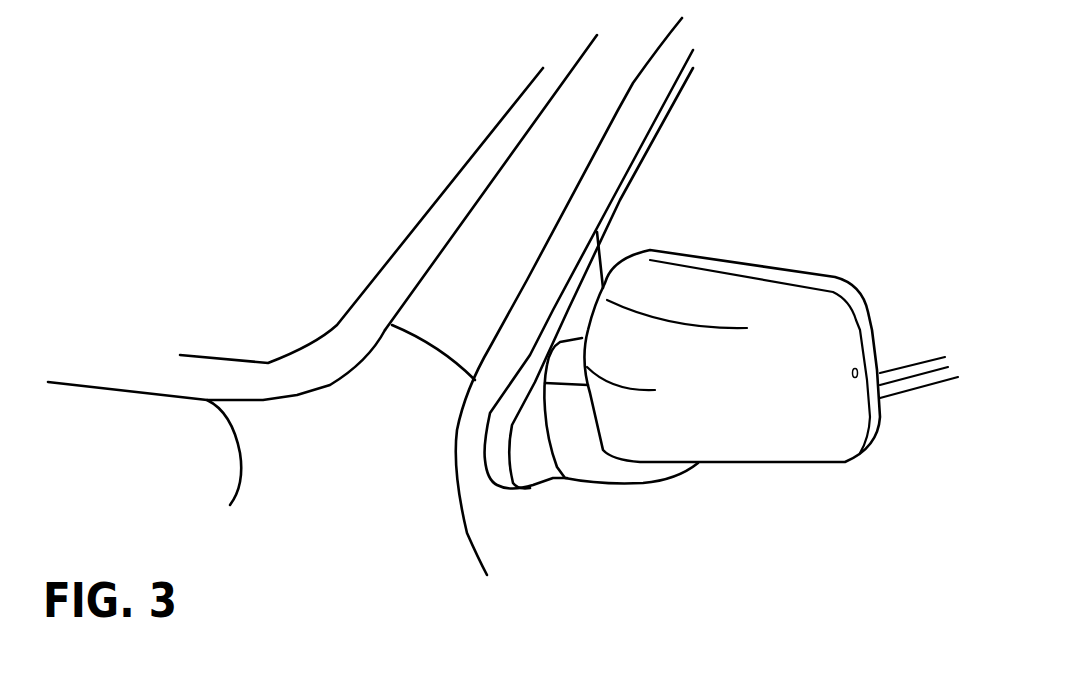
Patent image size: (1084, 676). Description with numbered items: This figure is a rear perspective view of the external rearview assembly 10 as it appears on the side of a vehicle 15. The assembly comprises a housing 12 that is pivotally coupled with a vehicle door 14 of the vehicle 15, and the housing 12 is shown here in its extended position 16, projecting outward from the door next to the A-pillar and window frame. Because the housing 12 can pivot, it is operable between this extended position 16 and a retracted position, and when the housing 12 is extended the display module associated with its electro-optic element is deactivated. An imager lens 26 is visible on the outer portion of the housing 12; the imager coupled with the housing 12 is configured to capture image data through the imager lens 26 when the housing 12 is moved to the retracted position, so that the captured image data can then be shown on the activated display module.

The external rearview assembly 10 is at (738, 381).
The housing 12 is at (742, 440).
The vehicle door 14 is at (896, 517).
The vehicle 15 is at (520, 200).
The extended position 16 is at (678, 498).
The imager lens 26 is at (858, 366).